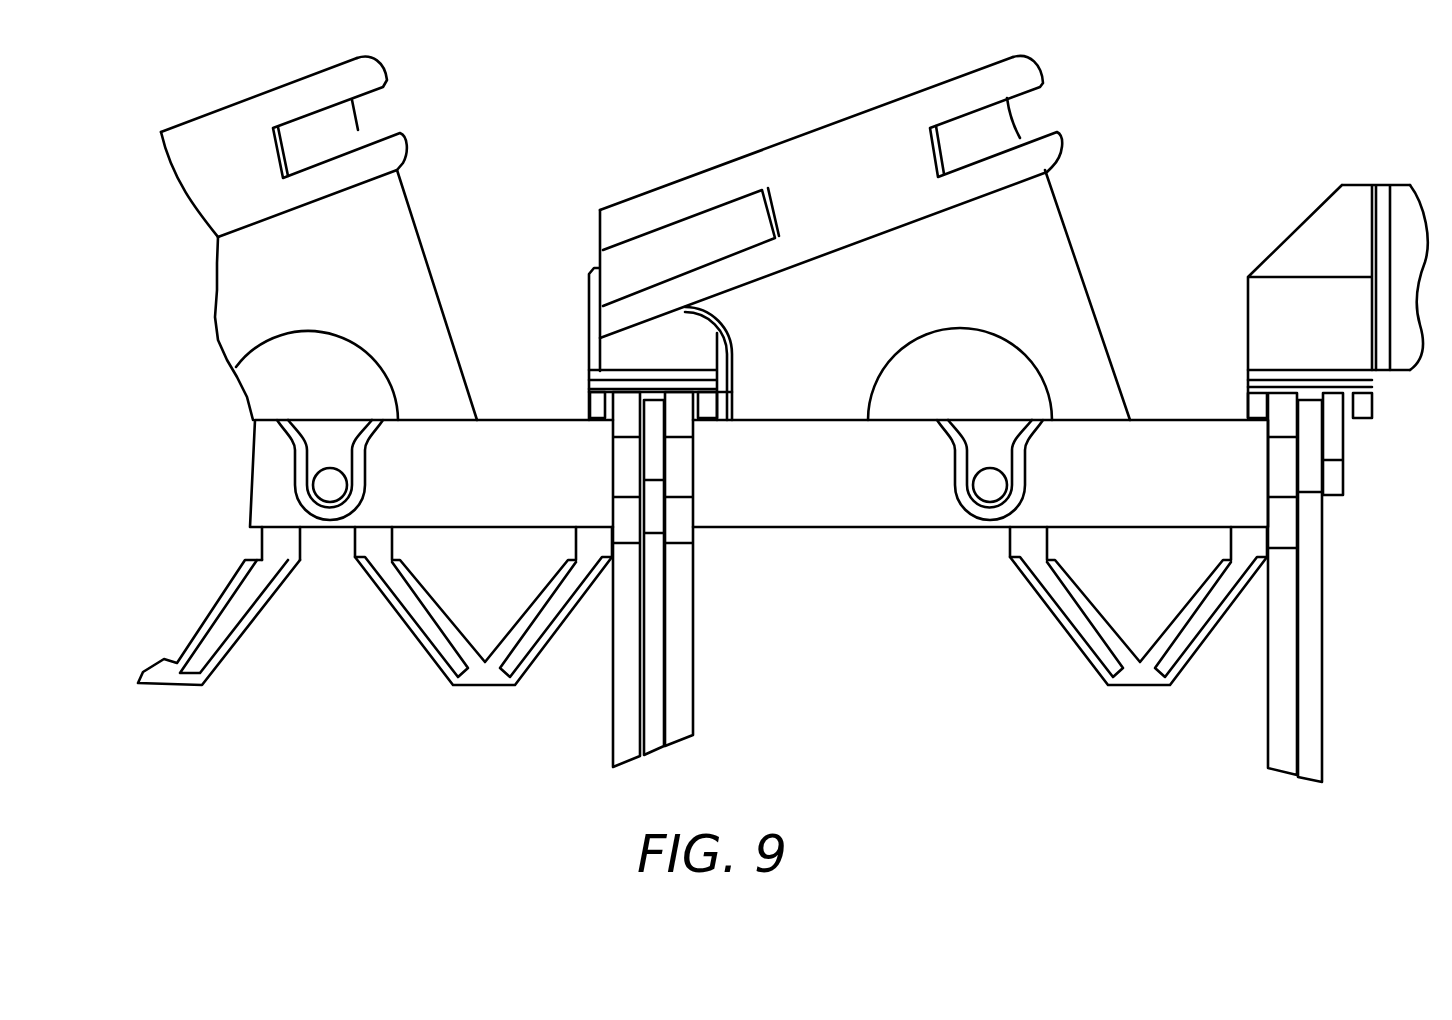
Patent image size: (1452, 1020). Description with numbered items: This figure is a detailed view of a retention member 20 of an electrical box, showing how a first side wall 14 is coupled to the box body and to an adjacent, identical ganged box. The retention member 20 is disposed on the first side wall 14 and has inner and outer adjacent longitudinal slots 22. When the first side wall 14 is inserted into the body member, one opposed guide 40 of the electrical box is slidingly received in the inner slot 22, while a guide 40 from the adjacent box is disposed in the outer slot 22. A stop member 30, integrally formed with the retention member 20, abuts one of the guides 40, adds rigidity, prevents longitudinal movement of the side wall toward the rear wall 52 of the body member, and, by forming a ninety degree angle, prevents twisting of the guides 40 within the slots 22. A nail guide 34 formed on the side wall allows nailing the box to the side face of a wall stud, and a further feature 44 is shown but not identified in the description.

The first side wall 14 is at (655, 670).
The retention member 20 is at (729, 319).
The longitudinal slot 22 is at (702, 370).
The stop member 30 is at (710, 402).
The nail guide 34 is at (836, 190).
The guide 40 is at (627, 478).
The mounting hole 44 is at (328, 488).
The rear wall 52 is at (307, 645).